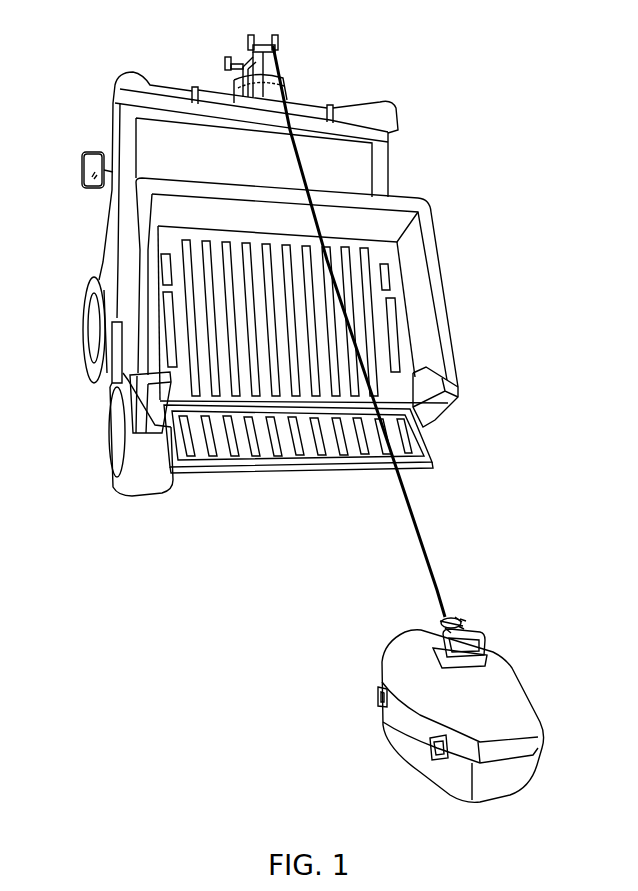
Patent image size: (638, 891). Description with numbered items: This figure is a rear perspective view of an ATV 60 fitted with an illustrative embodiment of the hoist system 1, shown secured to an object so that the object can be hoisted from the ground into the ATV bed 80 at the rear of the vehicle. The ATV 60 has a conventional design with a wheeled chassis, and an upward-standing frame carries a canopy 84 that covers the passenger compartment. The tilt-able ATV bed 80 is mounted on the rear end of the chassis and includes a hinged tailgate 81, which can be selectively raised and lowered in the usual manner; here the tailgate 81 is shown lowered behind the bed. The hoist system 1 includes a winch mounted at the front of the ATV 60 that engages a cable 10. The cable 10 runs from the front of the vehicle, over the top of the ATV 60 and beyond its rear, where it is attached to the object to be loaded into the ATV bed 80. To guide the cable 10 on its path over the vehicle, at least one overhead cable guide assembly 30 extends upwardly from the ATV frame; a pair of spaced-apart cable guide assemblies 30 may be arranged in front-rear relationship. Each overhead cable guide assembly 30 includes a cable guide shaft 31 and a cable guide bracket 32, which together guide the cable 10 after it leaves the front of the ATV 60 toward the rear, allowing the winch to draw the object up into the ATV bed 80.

The hoist system 1 is at (305, 62).
The cable 10 is at (282, 97).
The overhead cable guide assembly 30 is at (243, 40).
The cable guide shaft 31 is at (277, 80).
The cable guide bracket 32 is at (278, 40).
The ATV 60 is at (111, 480).
The ATV bed 80 is at (395, 345).
The tailgate 81 is at (430, 437).
The canopy 84 is at (353, 172).